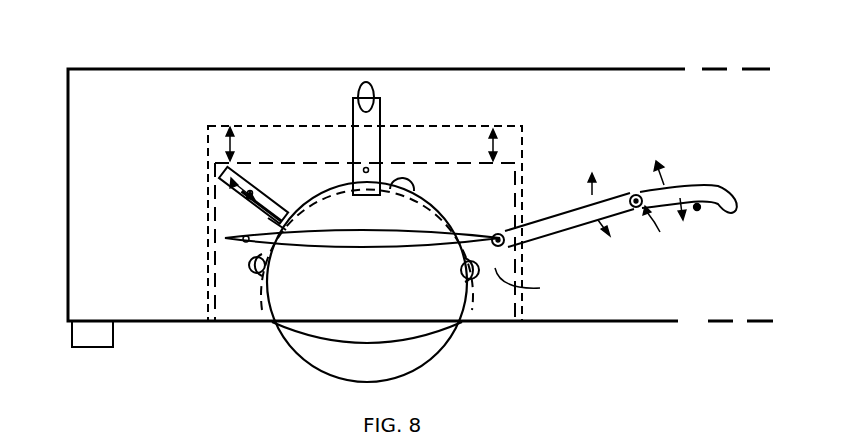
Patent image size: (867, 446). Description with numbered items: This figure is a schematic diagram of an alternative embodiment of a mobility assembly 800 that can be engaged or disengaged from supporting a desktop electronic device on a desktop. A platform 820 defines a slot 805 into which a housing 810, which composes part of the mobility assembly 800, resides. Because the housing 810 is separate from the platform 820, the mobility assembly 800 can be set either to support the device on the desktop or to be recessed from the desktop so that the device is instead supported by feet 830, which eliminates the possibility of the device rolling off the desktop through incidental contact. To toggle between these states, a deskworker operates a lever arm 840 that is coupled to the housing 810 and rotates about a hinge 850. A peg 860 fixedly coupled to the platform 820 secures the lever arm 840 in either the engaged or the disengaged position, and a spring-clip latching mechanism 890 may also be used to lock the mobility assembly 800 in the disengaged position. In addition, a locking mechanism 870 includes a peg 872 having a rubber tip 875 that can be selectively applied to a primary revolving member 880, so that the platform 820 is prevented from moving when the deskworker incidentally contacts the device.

The mobility assembly 800 is at (175, 358).
The slot 805 is at (430, 125).
The housing 810 is at (512, 162).
The platform 820 is at (463, 69).
The feet 830 is at (77, 338).
The lever arm 840 is at (722, 185).
The hinge 850 is at (632, 198).
The peg 860 is at (697, 211).
The locking mechanism 870 is at (228, 201).
The peg 872 is at (253, 208).
The rubber tip 875 is at (277, 204).
The primary revolving member 880 is at (330, 358).
The spring-clip latching mechanism 890 is at (382, 115).